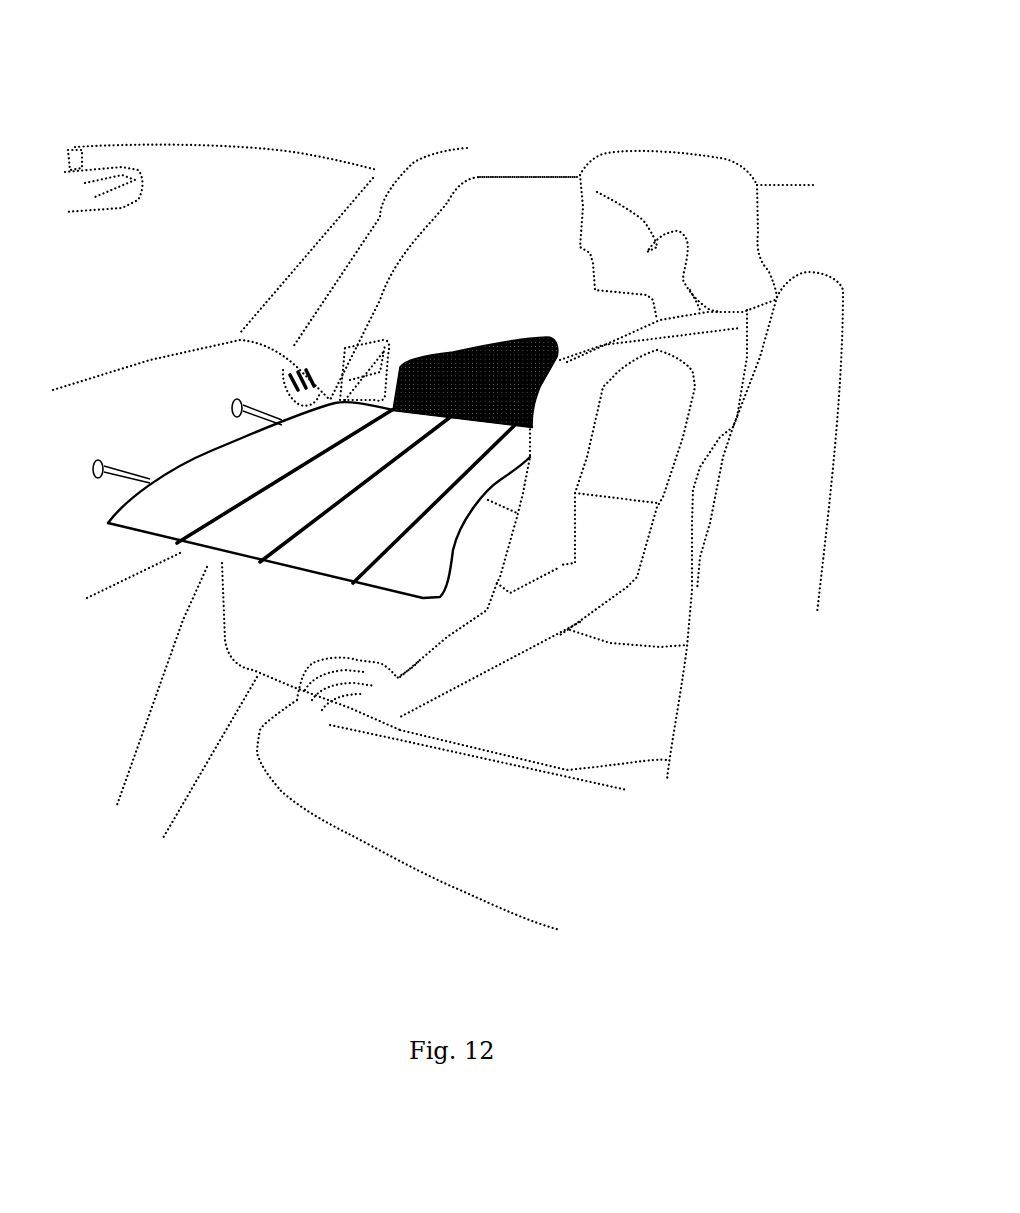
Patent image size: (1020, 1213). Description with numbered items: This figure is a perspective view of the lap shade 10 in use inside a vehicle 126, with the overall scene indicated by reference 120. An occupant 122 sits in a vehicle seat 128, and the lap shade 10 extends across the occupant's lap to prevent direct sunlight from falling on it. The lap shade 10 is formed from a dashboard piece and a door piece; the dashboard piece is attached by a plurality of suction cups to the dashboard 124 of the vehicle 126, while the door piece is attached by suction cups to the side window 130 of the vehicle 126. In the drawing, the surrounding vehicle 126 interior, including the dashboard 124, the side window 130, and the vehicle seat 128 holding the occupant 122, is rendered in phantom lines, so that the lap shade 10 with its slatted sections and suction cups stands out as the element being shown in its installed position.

The lap shade 10 is at (480, 336).
The vehicle interior 120 is at (704, 70).
The occupant 122 is at (750, 208).
The dashboard 124 is at (157, 368).
The vehicle 126 is at (313, 173).
The vehicle seat 128 is at (555, 912).
The side window 130 is at (513, 195).